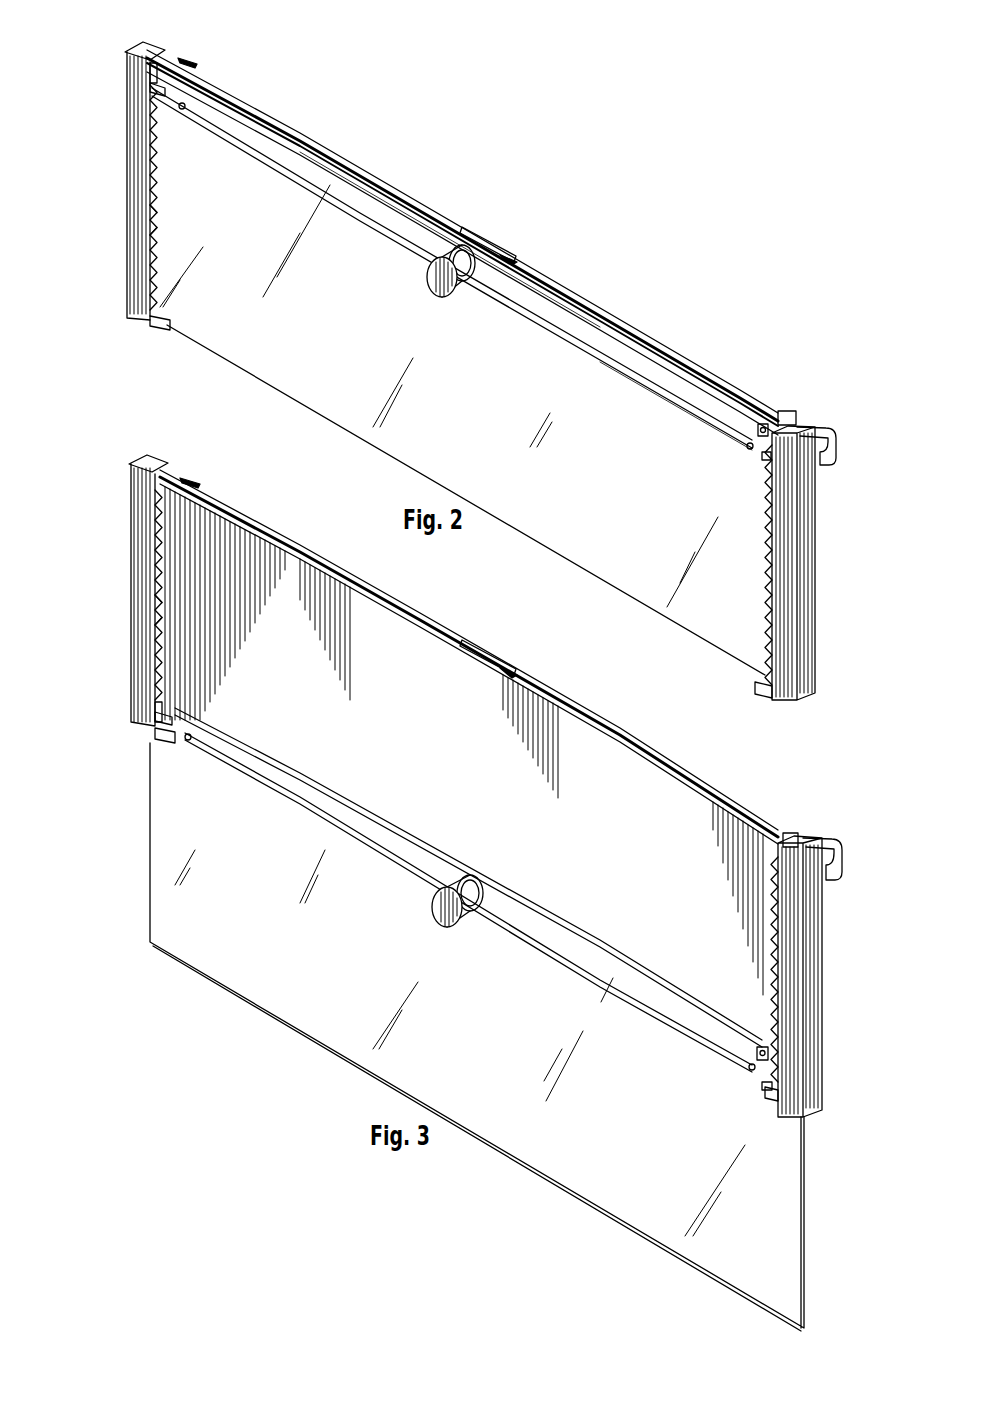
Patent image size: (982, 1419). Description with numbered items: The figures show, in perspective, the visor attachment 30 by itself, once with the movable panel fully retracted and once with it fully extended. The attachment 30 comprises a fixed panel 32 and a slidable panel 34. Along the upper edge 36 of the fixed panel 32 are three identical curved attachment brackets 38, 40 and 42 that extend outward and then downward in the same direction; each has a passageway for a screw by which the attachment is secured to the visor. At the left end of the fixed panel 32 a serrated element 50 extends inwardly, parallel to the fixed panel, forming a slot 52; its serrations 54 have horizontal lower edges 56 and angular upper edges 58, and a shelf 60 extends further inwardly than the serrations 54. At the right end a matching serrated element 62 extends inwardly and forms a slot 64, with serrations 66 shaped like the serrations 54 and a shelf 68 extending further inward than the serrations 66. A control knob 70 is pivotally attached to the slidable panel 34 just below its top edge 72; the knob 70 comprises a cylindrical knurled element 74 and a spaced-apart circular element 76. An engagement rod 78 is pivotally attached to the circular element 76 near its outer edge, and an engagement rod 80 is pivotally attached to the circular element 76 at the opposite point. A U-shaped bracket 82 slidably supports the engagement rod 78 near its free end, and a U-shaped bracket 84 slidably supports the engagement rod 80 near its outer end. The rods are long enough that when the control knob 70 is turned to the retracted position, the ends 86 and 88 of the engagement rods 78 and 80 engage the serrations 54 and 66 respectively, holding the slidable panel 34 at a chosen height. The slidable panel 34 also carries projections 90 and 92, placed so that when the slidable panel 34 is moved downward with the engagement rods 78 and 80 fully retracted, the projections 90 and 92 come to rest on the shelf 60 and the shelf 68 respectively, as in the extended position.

In FIG. 2, the attachment 30 is at (118, 170).
In FIG. 3, the attachment 30 is at (122, 580).
In FIG. 2, the fixed panel 32 is at (605, 311).
In FIG. 3, the fixed panel 32 is at (490, 787).
In FIG. 2, the slidable panel 34 is at (465, 396).
In FIG. 3, the slidable panel 34 is at (490, 1032).
In FIG. 2, the upper edge 36 is at (340, 156).
In FIG. 3, the upper edge 36 is at (325, 560).
In FIG. 2, the curved attachment bracket 38 is at (176, 50).
In FIG. 3, the curved attachment bracket 38 is at (178, 470).
In FIG. 2, the curved attachment bracket 40 is at (502, 242).
In FIG. 3, the curved attachment bracket 40 is at (497, 658).
In FIG. 2, the curved attachment bracket 42 is at (832, 440).
In FIG. 3, the curved attachment bracket 42 is at (835, 858).
In FIG. 2, the serrated element 50 is at (132, 258).
In FIG. 3, the serrated element 50 is at (132, 680).
In FIG. 2, the slot 52 is at (148, 44).
In FIG. 3, the slot 52 is at (150, 460).
In FIG. 2, the serrations 54 is at (153, 176).
In FIG. 3, the serrations 54 is at (160, 550).
In FIG. 2, the horizontal lower edges 56 is at (158, 236).
In FIG. 3, the horizontal lower edges 56 is at (162, 625).
In FIG. 2, the angular upper edges 58 is at (160, 205).
In FIG. 3, the angular upper edges 58 is at (163, 595).
In FIG. 2, the shelf 60 is at (160, 325).
In FIG. 3, the shelf 60 is at (155, 740).
In FIG. 2, the serrated element 62 is at (795, 615).
In FIG. 3, the serrated element 62 is at (800, 1030).
In FIG. 2, the slot 64 is at (797, 420).
In FIG. 3, the slot 64 is at (798, 840).
In FIG. 2, the serrations 66 is at (768, 485).
In FIG. 3, the serrations 66 is at (774, 969).
In FIG. 2, the shelf 68 is at (766, 678).
In FIG. 3, the shelf 68 is at (770, 1100).
In FIG. 2, the control knob 70 is at (418, 272).
In FIG. 3, the control knob 70 is at (421, 907).
In FIG. 2, the top edge 72 is at (315, 180).
In FIG. 3, the top edge 72 is at (438, 842).
In FIG. 2, the cylindrical knurled element 74 is at (440, 292).
In FIG. 3, the cylindrical knurled element 74 is at (440, 920).
In FIG. 2, the circular element 76 is at (482, 266).
In FIG. 3, the circular element 76 is at (482, 888).
In FIG. 2, the engagement rod 78 is at (388, 238).
In FIG. 3, the engagement rod 78 is at (390, 850).
In FIG. 2, the engagement rod 80 is at (640, 384).
In FIG. 3, the engagement rod 80 is at (672, 1034).
In FIG. 2, the U-shaped bracket 82 is at (182, 108).
In FIG. 3, the U-shaped bracket 82 is at (188, 740).
In FIG. 2, the U-shaped bracket 84 is at (747, 444).
In FIG. 3, the U-shaped bracket 84 is at (750, 1068).
In FIG. 2, the end of engagement rod 86 is at (160, 92).
In FIG. 3, the end of engagement rod 86 is at (185, 716).
In FIG. 2, the end of engagement rod 88 is at (768, 458).
In FIG. 3, the end of engagement rod 88 is at (762, 1085).
In FIG. 2, the projection 90 is at (165, 80).
In FIG. 3, the projection 90 is at (178, 708).
In FIG. 2, the projection 92 is at (755, 420).
In FIG. 3, the projection 92 is at (758, 1048).